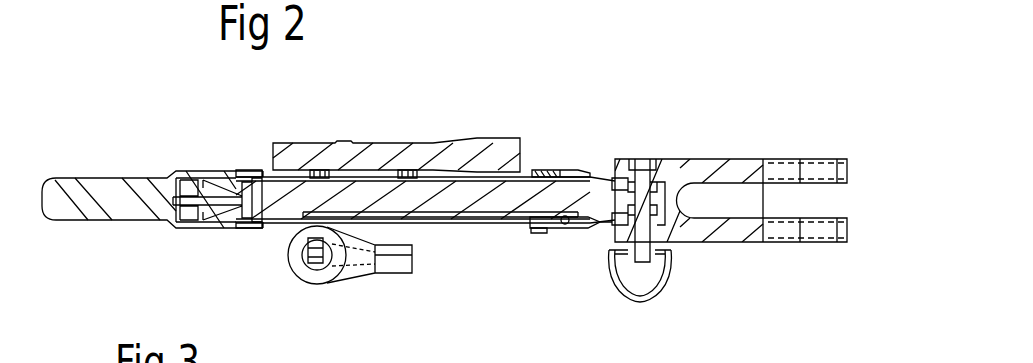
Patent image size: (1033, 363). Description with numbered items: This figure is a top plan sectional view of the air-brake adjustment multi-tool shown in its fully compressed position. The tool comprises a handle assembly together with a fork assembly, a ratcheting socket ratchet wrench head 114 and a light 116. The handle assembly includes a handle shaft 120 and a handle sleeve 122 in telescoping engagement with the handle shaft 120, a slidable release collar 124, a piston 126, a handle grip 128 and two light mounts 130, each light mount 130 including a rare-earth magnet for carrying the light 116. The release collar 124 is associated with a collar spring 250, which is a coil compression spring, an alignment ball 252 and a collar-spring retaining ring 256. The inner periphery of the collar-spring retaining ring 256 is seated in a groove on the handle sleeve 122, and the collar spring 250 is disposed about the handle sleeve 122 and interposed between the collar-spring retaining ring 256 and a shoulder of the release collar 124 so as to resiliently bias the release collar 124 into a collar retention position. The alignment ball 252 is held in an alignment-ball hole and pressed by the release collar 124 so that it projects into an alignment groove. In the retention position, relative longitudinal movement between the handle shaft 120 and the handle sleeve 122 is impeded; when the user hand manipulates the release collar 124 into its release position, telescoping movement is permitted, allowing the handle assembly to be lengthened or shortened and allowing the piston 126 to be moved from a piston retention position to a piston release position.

The ratcheting socket ratchet wrench head 114 is at (325, 287).
The light 116 is at (490, 150).
The handle shaft 120 is at (455, 220).
The handle sleeve 122 is at (417, 225).
The slidable release collar 124 is at (535, 229).
The piston 126 is at (247, 180).
The handle grip 128 is at (66, 222).
The light mounts 130 is at (320, 170).
The collar spring 250 is at (550, 172).
The alignment ball 252 is at (568, 224).
The collar-spring retaining ring 256 is at (527, 229).